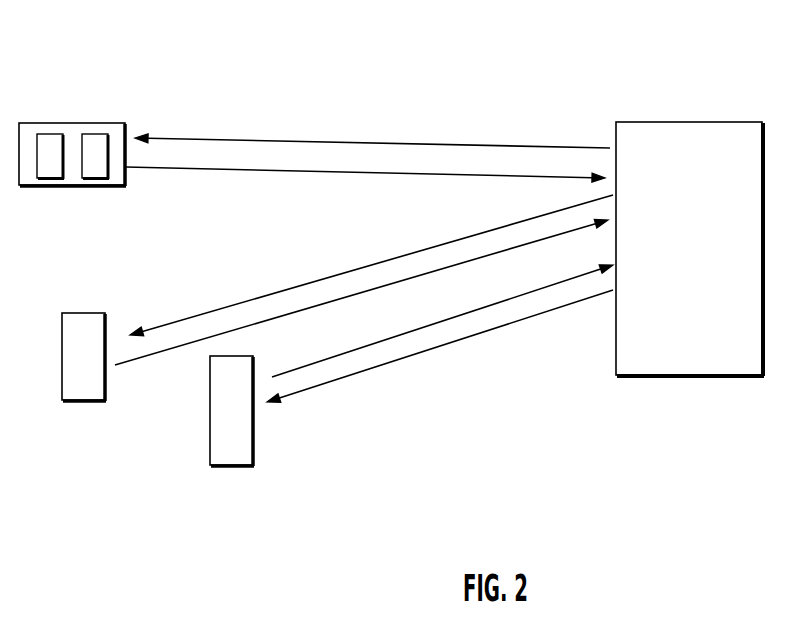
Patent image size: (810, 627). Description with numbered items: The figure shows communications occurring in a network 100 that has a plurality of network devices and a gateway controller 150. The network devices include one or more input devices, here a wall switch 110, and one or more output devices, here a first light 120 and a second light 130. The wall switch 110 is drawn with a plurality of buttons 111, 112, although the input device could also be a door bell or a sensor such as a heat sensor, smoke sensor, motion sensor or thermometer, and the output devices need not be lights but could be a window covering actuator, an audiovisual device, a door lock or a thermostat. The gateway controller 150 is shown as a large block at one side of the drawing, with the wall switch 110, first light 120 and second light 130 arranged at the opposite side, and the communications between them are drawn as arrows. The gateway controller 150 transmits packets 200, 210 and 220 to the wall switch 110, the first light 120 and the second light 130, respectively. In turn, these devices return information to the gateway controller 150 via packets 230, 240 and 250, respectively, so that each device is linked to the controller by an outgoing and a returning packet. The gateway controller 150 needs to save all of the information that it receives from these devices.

The network 100 is at (575, 80).
The wall switch 110 is at (41, 122).
The button 111 is at (50, 178).
The button 112 is at (98, 178).
The first light 120 is at (83, 400).
The second light 130 is at (233, 465).
The gateway controller 150 is at (635, 375).
The packet 200 is at (308, 142).
The packet 210 is at (258, 295).
The packet 220 is at (345, 375).
The packet 230 is at (385, 175).
The packet 240 is at (398, 283).
The packet 250 is at (452, 313).